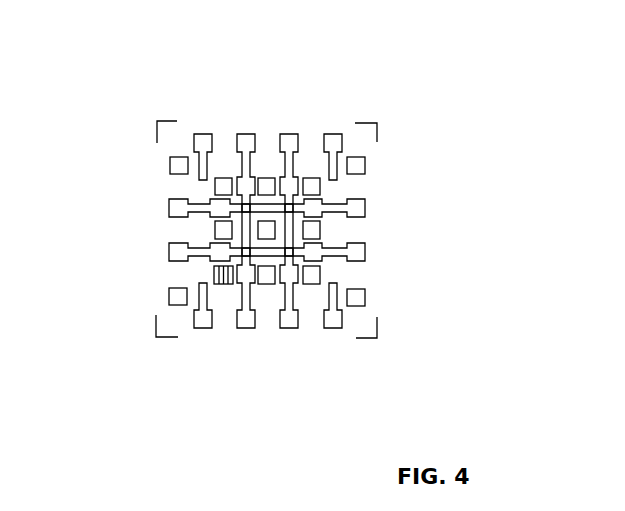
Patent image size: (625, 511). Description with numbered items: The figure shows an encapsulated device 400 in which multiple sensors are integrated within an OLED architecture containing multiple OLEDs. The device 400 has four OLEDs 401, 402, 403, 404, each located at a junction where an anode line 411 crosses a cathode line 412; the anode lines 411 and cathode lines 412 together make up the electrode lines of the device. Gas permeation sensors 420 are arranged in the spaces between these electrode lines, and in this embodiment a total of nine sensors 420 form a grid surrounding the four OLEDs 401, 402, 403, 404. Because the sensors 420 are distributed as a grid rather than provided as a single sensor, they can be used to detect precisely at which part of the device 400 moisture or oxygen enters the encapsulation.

The encapsulated device 400 is at (309, 182).
The OLED 401 is at (243, 208).
The OLED 402 is at (240, 255).
The OLED 403 is at (410, 226).
The OLED 404 is at (298, 253).
The anode line 411 is at (408, 194).
The cathode line 412 is at (353, 173).
The gas permeation sensor 420 is at (315, 276).